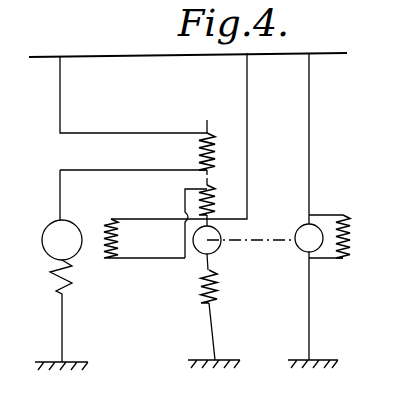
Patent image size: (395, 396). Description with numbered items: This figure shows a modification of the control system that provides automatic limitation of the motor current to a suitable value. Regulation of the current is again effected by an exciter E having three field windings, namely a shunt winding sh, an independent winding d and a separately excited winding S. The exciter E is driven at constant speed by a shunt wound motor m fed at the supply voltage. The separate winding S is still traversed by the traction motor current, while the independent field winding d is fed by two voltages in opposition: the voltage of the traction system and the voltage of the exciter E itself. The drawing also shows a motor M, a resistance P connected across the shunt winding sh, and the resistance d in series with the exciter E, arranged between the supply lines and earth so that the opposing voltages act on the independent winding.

The separate winding S is at (196, 147).
The shunt winding sh is at (212, 218).
The resistance P is at (144, 238).
The motor M is at (62, 291).
The exciter E is at (244, 239).
The shunt wound motor m is at (320, 233).
The independent winding d is at (197, 307).